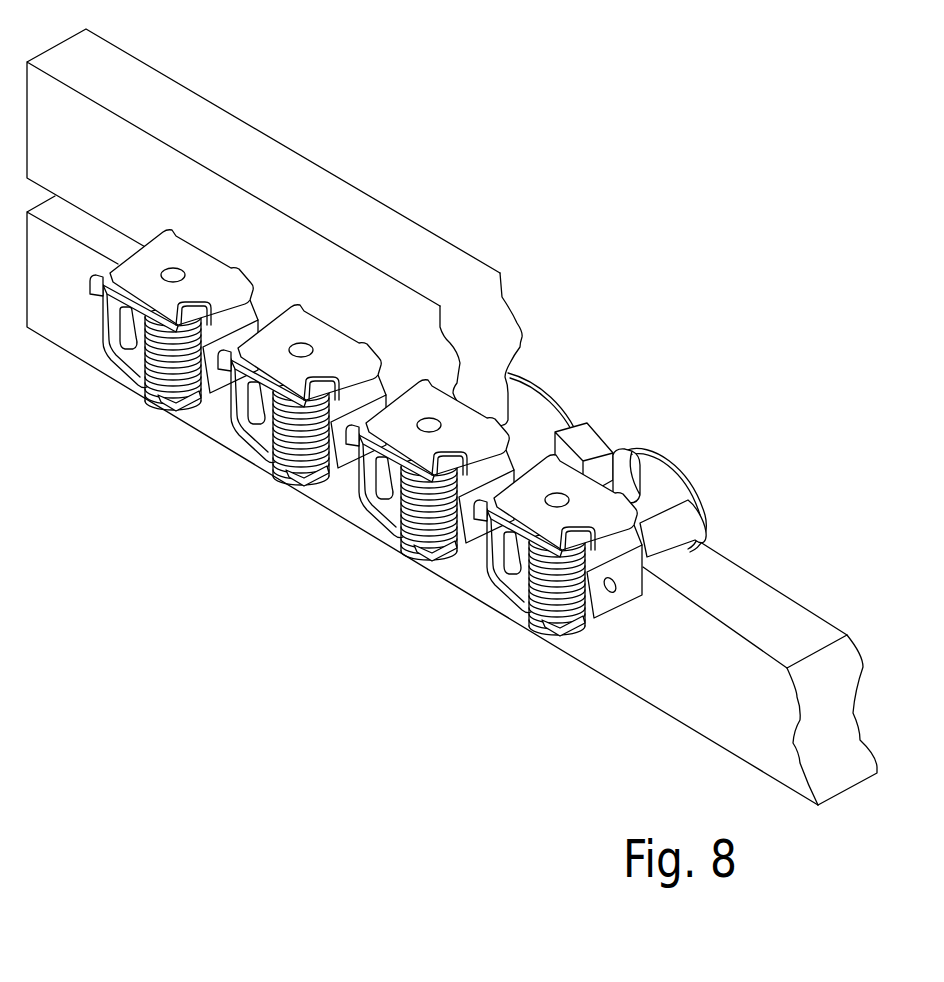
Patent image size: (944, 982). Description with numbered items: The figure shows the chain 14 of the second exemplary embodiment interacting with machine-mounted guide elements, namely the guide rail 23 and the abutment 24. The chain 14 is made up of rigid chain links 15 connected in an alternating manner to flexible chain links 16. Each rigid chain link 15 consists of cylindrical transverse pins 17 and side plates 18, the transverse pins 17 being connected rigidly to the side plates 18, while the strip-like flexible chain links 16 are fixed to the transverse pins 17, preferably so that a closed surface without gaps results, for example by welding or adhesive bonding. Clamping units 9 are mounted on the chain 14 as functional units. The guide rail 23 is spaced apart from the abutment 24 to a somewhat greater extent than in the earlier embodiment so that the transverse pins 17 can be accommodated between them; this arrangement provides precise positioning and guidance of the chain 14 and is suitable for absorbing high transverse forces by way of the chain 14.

The clamping unit 9 is at (535, 507).
The chain 14 is at (573, 340).
The rigid chain link 15 is at (573, 397).
The flexible chain link 16 is at (583, 463).
The transverse pin 17 is at (620, 478).
The side plate 18 is at (661, 485).
The guide rail 23 is at (760, 602).
The abutment 24 is at (417, 237).